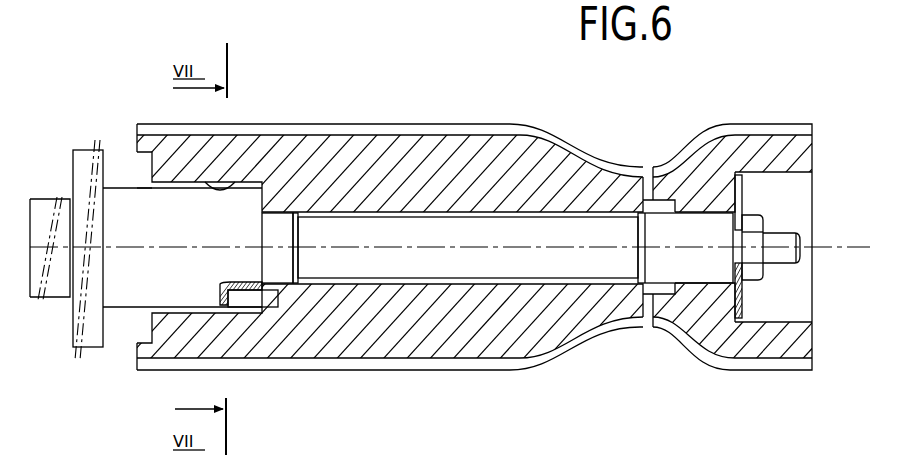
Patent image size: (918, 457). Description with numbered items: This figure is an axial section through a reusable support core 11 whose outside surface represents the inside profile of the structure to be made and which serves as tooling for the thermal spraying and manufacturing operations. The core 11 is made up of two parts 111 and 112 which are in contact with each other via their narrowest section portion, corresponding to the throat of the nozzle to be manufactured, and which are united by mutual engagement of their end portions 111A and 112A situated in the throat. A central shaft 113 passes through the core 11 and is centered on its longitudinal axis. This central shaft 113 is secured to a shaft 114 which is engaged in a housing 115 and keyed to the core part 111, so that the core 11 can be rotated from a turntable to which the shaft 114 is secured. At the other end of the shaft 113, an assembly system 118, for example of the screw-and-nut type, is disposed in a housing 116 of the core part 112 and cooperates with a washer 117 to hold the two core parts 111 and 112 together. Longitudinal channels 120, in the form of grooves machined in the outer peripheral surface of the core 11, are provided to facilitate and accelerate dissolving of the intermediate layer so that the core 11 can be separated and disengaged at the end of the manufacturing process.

The support core 11 is at (459, 242).
The core part 111 is at (459, 234).
The end portion 111A is at (658, 305).
The core part 112 is at (495, 167).
The end portion 112A is at (652, 190).
The central shaft 113 is at (503, 268).
The shaft 114 is at (120, 300).
The housing 115 is at (247, 182).
The housing 116 is at (772, 327).
The washer 117 is at (742, 186).
The assembly system 118 is at (755, 275).
The longitudinal channels 120 is at (370, 132).